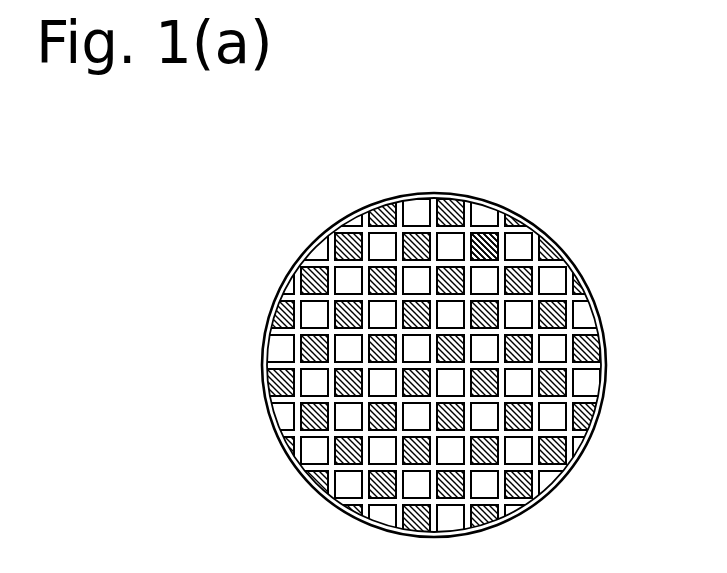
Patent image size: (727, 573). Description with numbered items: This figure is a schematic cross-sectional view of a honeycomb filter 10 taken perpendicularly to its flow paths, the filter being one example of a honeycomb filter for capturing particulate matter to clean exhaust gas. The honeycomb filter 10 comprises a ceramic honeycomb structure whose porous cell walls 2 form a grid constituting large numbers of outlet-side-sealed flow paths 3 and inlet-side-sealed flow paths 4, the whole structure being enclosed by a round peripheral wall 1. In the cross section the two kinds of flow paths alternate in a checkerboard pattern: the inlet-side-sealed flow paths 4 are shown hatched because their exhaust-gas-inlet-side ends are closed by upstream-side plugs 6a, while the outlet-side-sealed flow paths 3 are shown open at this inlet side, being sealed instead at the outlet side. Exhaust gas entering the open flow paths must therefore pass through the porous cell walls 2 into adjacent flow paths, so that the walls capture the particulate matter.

The honeycomb filter 10 is at (258, 171).
The peripheral wall 1 is at (345, 223).
The porous cell walls 2 is at (415, 230).
The outlet-side-sealed flow paths 3 is at (487, 282).
The inlet-side-sealed flow paths 4 is at (495, 250).
The upstream-side plugs 6a is at (487, 242).